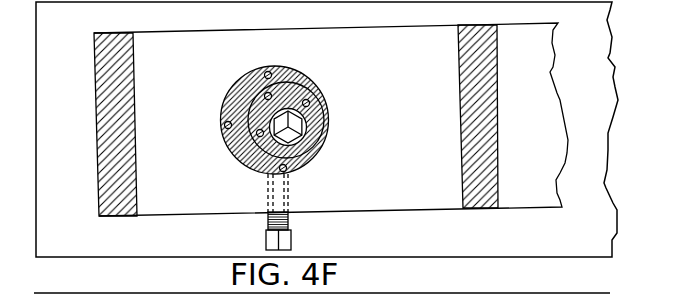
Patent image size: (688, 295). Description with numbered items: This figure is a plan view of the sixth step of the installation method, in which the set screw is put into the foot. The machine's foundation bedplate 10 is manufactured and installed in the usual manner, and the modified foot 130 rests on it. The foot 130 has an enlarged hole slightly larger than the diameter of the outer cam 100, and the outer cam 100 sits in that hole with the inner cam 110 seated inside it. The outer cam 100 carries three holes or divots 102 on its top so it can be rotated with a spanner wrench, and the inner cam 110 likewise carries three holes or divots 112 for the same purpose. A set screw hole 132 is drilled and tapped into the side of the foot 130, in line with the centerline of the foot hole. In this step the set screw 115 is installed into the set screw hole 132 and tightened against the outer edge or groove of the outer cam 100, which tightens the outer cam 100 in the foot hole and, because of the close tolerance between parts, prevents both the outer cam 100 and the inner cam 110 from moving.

The bedplate 10 is at (36, 49).
The outer cam 100 is at (274, 121).
The holes or divots 102 is at (228, 126).
The inner cam 110 is at (250, 174).
The holes or divots 112 is at (328, 112).
The set screw 115 is at (265, 232).
The foot 130 is at (99, 172).
The set screw hole 132 is at (290, 203).